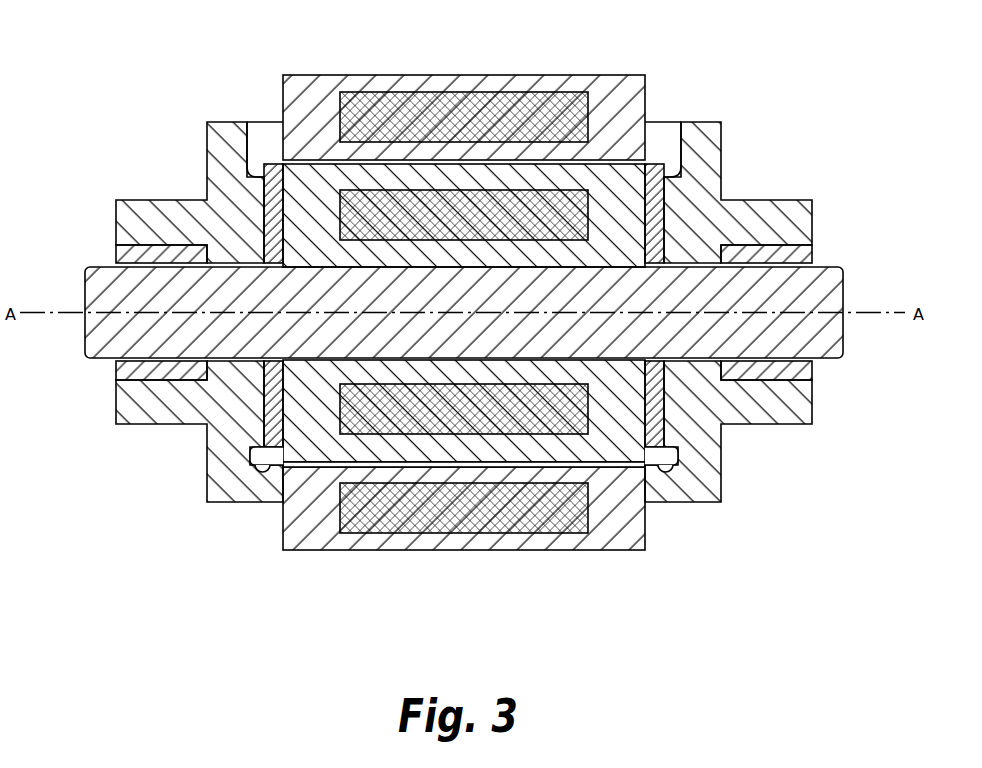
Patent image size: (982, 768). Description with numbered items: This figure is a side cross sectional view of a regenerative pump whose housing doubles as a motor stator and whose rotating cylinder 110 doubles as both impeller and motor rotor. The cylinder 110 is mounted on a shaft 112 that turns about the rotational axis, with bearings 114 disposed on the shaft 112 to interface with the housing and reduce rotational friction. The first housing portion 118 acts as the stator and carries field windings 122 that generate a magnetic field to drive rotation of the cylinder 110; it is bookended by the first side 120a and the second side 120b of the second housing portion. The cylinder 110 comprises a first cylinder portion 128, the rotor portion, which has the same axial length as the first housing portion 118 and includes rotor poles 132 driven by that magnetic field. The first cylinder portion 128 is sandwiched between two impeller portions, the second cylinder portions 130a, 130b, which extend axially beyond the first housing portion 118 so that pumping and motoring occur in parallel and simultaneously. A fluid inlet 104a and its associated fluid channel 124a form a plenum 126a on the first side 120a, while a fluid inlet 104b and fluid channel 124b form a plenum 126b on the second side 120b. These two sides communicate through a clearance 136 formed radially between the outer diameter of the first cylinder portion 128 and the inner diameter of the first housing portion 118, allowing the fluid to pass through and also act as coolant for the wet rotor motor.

The cylinder 110 is at (432, 386).
The shaft 112 is at (825, 313).
The bearings 114 is at (800, 257).
The first housing portion 118 is at (622, 92).
The first side of the second housing portion 120a is at (184, 212).
The second side of the second housing portion 120b is at (702, 207).
The field windings 122 is at (487, 113).
The fluid channel 124a is at (248, 450).
The fluid channel 124b is at (657, 415).
The plena 126a is at (272, 468).
The plena 126b is at (672, 474).
The first cylinder portion 128 is at (632, 450).
The second cylinder portion 130a is at (278, 210).
The second cylinder portion 130b is at (680, 437).
The rotor poles 132 is at (580, 423).
The clearance 136 is at (382, 473).
The fluid inlet 104a is at (259, 135).
The fluid inlet 104b is at (672, 135).